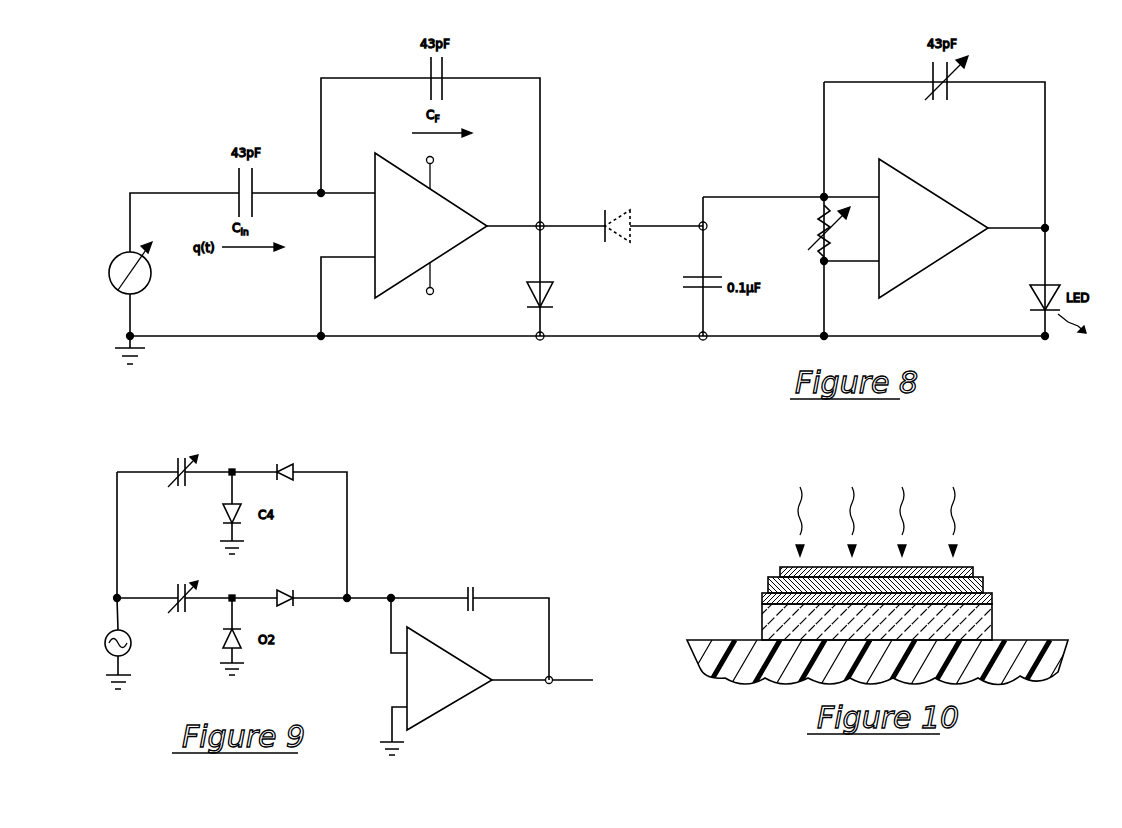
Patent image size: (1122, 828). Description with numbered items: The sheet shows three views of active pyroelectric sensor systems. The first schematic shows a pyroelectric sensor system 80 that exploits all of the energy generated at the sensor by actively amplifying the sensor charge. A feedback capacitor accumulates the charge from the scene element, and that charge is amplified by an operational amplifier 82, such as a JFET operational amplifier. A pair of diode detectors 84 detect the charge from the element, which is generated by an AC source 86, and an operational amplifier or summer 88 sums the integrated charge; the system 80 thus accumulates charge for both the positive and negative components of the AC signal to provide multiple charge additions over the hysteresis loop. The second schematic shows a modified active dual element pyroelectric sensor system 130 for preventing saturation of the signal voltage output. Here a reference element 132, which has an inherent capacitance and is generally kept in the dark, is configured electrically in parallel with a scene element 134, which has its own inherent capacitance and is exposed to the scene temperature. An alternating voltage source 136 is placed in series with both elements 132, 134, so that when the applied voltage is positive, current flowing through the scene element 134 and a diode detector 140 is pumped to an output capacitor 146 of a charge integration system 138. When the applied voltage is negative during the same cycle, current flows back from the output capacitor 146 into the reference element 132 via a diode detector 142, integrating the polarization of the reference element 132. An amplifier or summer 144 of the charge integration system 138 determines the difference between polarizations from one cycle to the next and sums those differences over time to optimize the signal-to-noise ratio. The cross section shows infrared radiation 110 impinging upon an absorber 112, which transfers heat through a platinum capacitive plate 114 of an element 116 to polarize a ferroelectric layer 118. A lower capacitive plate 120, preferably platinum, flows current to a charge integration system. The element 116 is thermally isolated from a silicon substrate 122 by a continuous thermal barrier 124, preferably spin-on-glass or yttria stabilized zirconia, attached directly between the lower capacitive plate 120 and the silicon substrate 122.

In FIG. 8, the pyroelectric sensor system 80 is at (665, 102).
In FIG. 8, the operational amplifier 82 is at (426, 240).
In FIG. 8, the diode detectors 84 is at (552, 302).
In FIG. 8, the AC source 86 is at (108, 272).
In FIG. 8, the operational amplifier or summer 88 is at (931, 243).
In FIG. 9, the active dual element pyroelectric sensor system 130 is at (127, 460).
In FIG. 9, the reference element 132 is at (178, 466).
In FIG. 9, the scene element 134 is at (178, 590).
In FIG. 9, the alternating voltage source 136 is at (107, 634).
In FIG. 9, the charge integration system 138 is at (503, 577).
In FIG. 9, the diode detector 140 is at (305, 592).
In FIG. 9, the diode detector 142 is at (292, 469).
In FIG. 9, the amplifier or summer 144 is at (447, 710).
In FIG. 9, the output capacitor 146 is at (465, 594).
In FIG. 10, the infrared radiation 110 is at (850, 492).
In FIG. 10, the absorber 112 is at (963, 570).
In FIG. 10, the platinum capacitive plate 114 is at (980, 584).
In FIG. 10, the element 116 is at (984, 512).
In FIG. 10, the ferroelectric layer 118 is at (989, 598).
In FIG. 10, the lower capacitive plate 120 is at (992, 612).
In FIG. 10, the silicon substrate 122 is at (1062, 644).
In FIG. 10, the thermal barrier 124 is at (968, 628).